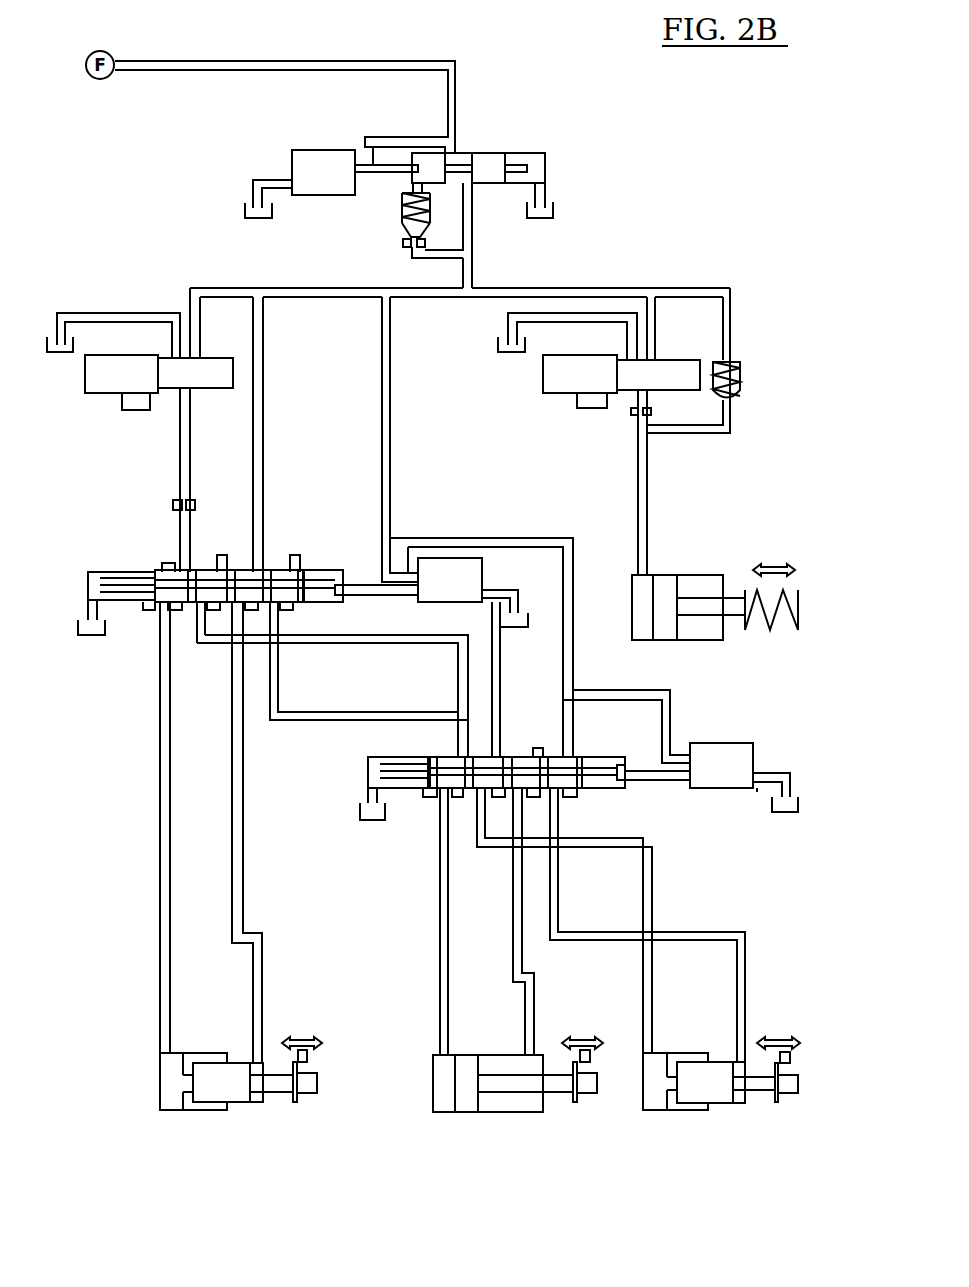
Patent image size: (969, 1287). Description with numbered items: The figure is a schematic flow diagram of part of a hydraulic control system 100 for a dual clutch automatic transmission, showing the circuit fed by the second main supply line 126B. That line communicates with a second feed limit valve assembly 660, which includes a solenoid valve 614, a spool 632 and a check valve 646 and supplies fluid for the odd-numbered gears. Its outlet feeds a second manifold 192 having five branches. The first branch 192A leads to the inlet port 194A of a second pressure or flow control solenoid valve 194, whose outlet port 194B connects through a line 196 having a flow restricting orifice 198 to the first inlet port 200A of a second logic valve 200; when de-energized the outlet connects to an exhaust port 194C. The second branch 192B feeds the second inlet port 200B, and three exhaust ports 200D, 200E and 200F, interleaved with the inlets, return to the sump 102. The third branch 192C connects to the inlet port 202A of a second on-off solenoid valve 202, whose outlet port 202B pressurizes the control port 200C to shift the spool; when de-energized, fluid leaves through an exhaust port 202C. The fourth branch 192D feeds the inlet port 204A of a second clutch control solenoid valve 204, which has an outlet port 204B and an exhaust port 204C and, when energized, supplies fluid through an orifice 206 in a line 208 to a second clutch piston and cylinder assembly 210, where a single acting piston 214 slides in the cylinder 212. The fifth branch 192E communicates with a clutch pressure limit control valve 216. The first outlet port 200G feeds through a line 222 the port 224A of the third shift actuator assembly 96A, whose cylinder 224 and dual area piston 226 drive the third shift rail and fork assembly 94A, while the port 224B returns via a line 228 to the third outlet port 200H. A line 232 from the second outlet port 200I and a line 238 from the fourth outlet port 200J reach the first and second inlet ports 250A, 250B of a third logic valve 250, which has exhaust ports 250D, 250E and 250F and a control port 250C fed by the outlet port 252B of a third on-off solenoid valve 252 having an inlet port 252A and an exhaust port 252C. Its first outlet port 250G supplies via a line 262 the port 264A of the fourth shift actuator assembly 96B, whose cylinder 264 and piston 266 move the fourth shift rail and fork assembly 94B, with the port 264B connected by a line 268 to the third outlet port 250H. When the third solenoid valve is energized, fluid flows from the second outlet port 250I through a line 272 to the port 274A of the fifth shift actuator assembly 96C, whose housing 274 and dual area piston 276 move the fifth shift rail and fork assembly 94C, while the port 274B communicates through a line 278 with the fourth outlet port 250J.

The hydraulic control system 100 is at (657, 128).
The sump 102 is at (255, 207).
The second main supply line 126B is at (457, 100).
The solenoid valve 614 is at (307, 158).
The spool 632 is at (484, 168).
The check valve 646 is at (402, 227).
The second feed limit valve assembly 660 is at (566, 162).
The second manifold 192 is at (474, 279).
The first branch 192A is at (190, 293).
The second branch 192B is at (266, 327).
The third branch 192C is at (392, 320).
The fourth branch 192D is at (656, 318).
The fifth branch 192E is at (731, 318).
The second electric pressure or flow control solenoid valve 194 is at (80, 418).
The inlet port 194A is at (193, 357).
The outlet port 194B is at (183, 391).
The exhaust port 194C is at (177, 357).
The line 196 is at (180, 442).
The flow restricting orifice 198 is at (177, 502).
The second two position spool or logic valve 200 is at (80, 654).
The first inlet port 200A is at (187, 557).
The second inlet port 200B is at (262, 560).
The control port 200C is at (347, 585).
The exhaust port 200D is at (147, 562).
The exhaust port 200E is at (218, 560).
The exhaust port 200F is at (297, 557).
The first outlet port 200G is at (165, 606).
The third outlet port 200H is at (240, 601).
The second outlet port 200I is at (197, 608).
The fourth outlet port 200J is at (281, 610).
The second two position (on-off) solenoid valve 202 is at (493, 573).
The inlet port 202A is at (410, 547).
The outlet port 202B is at (412, 601).
The exhaust port 202C is at (494, 679).
The second electric pressure or flow clutch control solenoid valve 204 is at (558, 412).
The inlet port 204A is at (652, 360).
The outlet port 204B is at (647, 392).
The exhaust port 204C is at (630, 360).
The orifice 206 is at (632, 413).
The line 208 is at (648, 481).
The second clutch piston and cylinder assembly 210 is at (715, 604).
The cylinder 212 is at (687, 642).
The single acting piston 214 is at (667, 590).
The clutch pressure limit control valve 216 is at (738, 396).
The line 222 is at (160, 816).
The third cylinder or housing 224 is at (190, 1111).
The port 224A is at (165, 1053).
The port 224B is at (257, 1057).
The third dual area piston 226 is at (228, 1086).
The line 228 is at (232, 818).
The line 232 is at (408, 635).
The line 238 is at (408, 711).
The third spool or logic valve 250 is at (364, 847).
The first inlet port 250A is at (457, 703).
The second inlet port 250B is at (537, 755).
The control port 250C is at (628, 791).
The exhaust port 250D is at (427, 750).
The exhaust port 250E is at (497, 748).
The exhaust port 250F is at (577, 750).
The first outlet port 250G is at (445, 798).
The third outlet port 250H is at (517, 798).
The second outlet port 250I is at (480, 798).
The fourth outlet port 250J is at (558, 798).
The third two position (on-off) solenoid valve 252 is at (740, 728).
The inlet port 252A is at (683, 760).
The outlet port 252B is at (683, 781).
The exhaust port 252C is at (757, 789).
The line 262 is at (438, 948).
The fourth cylinder or housing 264 is at (518, 1112).
The port 264A is at (443, 1057).
The port 264B is at (538, 1053).
The fourth piston 266 is at (468, 1098).
The line 268 is at (513, 951).
The line 272 is at (643, 986).
The fifth cylinder or housing 274 is at (672, 1111).
The port 274A is at (648, 1055).
The port 274B is at (742, 1065).
The fifth dual area piston 276 is at (707, 1088).
The line 278 is at (745, 968).
The third shift rail and fork assembly 94A is at (310, 1093).
The fourth shift rail and fork assembly 94B is at (588, 1094).
The fifth shift rail and fork assembly 94C is at (792, 1094).
The third shift actuator assembly 96A is at (196, 1075).
The fourth shift actuator assembly 96B is at (488, 1085).
The fifth shift actuator assembly 96C is at (693, 1095).